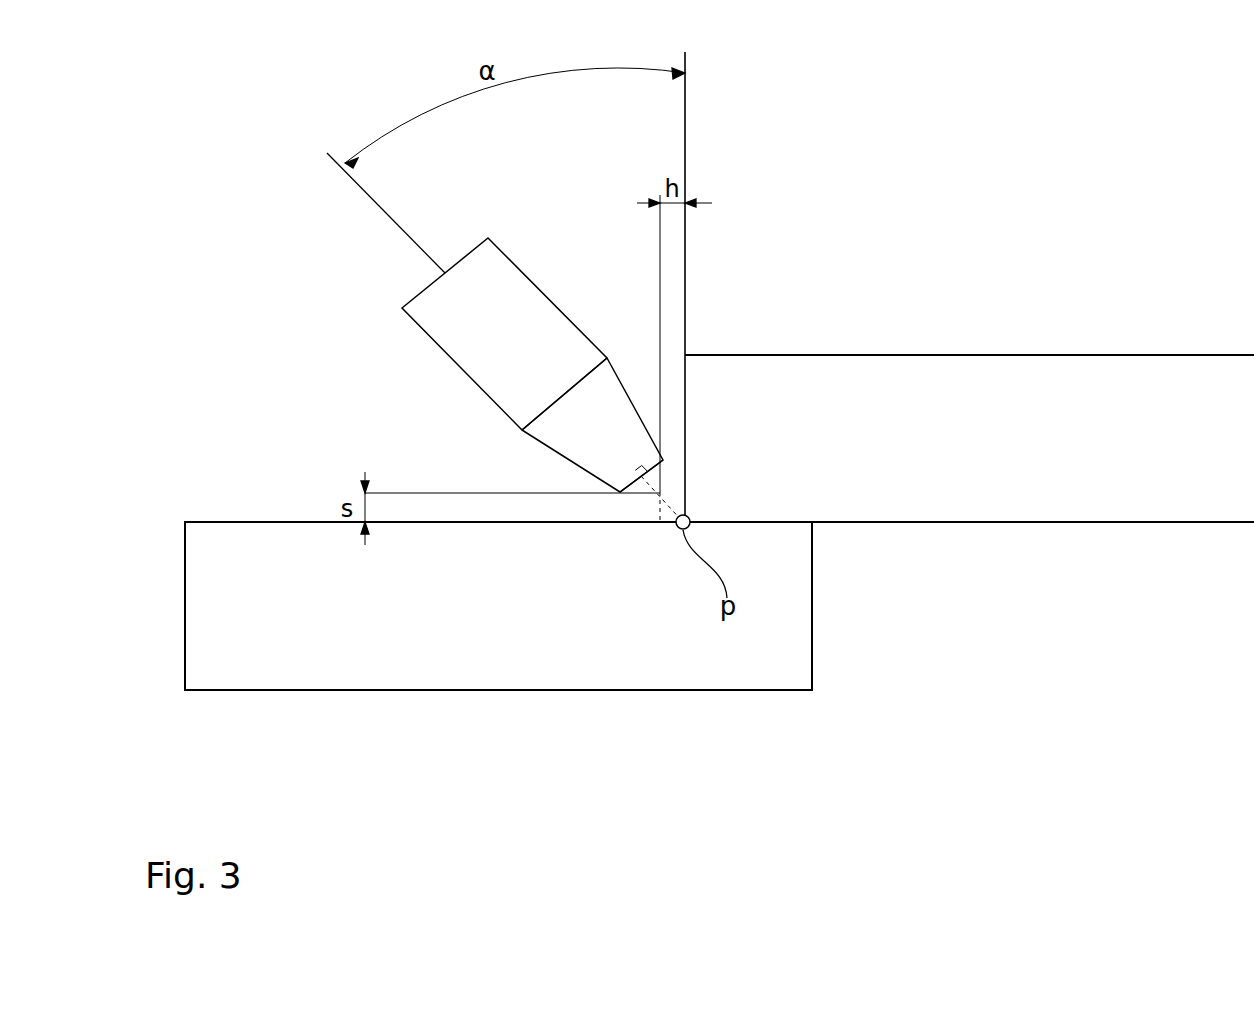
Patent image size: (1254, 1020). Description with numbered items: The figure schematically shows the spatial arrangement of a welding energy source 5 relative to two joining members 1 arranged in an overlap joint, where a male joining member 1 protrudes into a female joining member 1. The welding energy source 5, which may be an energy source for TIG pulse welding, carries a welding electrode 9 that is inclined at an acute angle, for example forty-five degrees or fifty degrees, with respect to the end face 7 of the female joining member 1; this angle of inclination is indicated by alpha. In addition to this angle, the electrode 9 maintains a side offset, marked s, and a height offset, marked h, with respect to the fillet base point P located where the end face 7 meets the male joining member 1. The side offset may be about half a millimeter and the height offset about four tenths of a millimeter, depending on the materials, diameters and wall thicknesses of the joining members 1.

The joining member 1 is at (222, 504).
The welding energy source 5 is at (533, 280).
The end face 7 is at (660, 288).
The welding electrode 9 is at (658, 492).